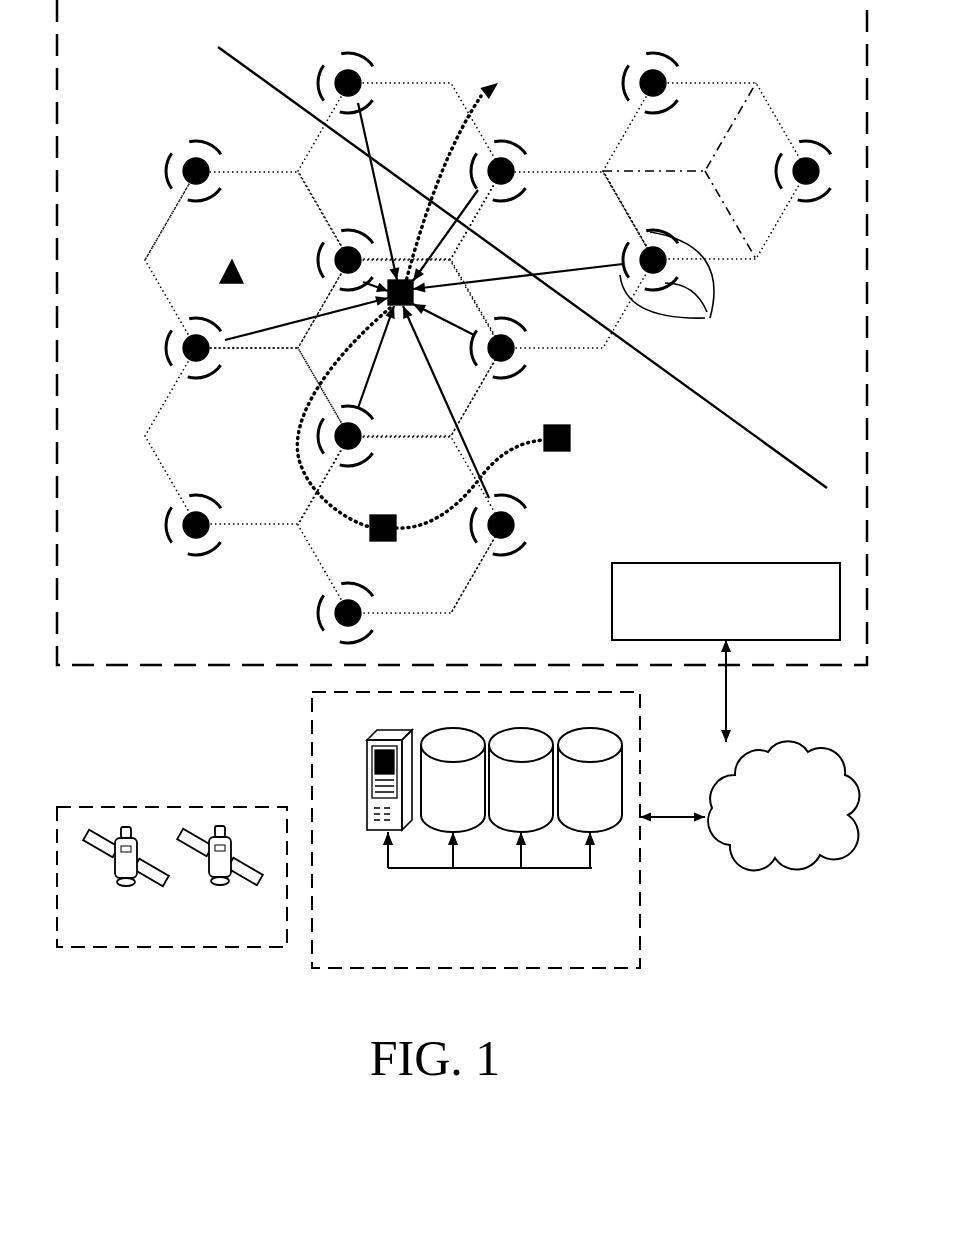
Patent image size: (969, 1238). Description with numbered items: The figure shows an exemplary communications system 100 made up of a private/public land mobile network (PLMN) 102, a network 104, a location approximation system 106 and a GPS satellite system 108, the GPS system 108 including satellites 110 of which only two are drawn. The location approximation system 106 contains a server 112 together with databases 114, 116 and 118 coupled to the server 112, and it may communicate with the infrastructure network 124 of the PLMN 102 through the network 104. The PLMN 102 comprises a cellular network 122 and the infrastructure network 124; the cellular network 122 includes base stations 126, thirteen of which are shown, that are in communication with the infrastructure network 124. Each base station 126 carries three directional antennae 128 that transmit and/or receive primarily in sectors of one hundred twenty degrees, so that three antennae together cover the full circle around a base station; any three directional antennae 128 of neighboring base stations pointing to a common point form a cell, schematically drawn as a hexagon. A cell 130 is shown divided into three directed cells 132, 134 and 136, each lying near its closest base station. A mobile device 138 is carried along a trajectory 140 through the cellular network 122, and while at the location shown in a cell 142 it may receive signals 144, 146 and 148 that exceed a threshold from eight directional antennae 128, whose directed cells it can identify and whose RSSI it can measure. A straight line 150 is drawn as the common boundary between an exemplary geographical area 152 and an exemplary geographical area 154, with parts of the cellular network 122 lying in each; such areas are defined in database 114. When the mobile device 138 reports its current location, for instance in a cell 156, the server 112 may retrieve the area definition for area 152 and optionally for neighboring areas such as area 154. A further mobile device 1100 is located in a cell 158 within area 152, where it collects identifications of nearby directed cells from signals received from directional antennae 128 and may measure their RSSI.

The communications system 100 is at (215, 785).
The private/public land mobile network (PLMN) 102 is at (462, 332).
The network 104 is at (749, 805).
The location approximation system 106 is at (476, 830).
The GPS satellite system 108 is at (172, 877).
The satellites 110 is at (112, 860).
The server 112 is at (367, 815).
The database 114 is at (453, 780).
The database 116 is at (521, 780).
The database 118 is at (590, 780).
The cellular network 122 is at (462, 55).
The infrastructure network 124 is at (726, 652).
The base stations 126 is at (647, 72).
The directional antennae 128 is at (170, 528).
The cell 130 is at (777, 227).
The directed cell 132 is at (679, 127).
The directed cell 134 is at (734, 211).
The directed cell 136 is at (653, 215).
The mobile device 138 is at (572, 432).
The trajectory 140 is at (497, 457).
The cell 142 is at (480, 387).
The signal 144 is at (343, 297).
The signal 146 is at (427, 358).
The signals 148 is at (377, 190).
The straight line 150 is at (793, 463).
The geographical area 152 is at (690, 448).
The geographical area 154 is at (767, 373).
The cell 156 is at (477, 570).
The cell 158 is at (160, 225).
The mobile device 1100 is at (227, 268).